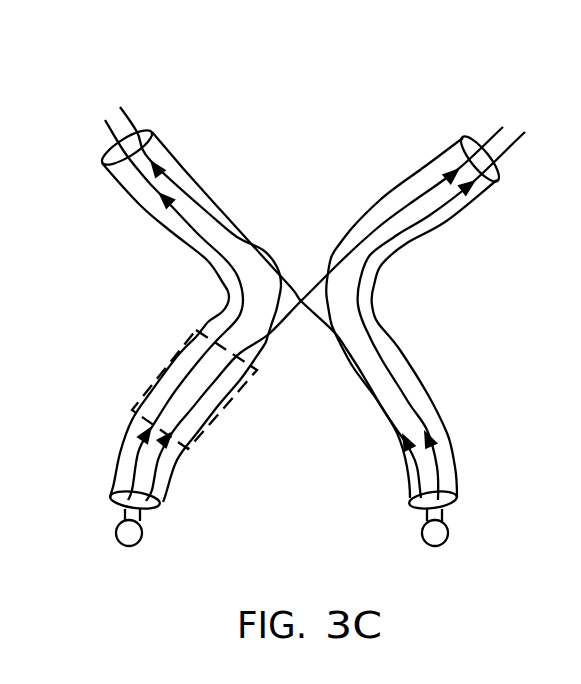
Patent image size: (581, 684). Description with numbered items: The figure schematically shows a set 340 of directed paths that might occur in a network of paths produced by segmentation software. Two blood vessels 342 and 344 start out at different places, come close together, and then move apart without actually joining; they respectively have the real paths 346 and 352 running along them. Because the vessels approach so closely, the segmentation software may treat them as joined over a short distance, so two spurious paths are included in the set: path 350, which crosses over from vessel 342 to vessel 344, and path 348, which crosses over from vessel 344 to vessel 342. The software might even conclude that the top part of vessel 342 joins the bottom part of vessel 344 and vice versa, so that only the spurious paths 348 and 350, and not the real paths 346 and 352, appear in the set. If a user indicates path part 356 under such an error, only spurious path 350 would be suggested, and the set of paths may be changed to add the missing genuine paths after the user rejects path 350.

The set of directed paths 340 is at (386, 92).
The blood vessel 342 is at (186, 351).
The blood vessel 344 is at (400, 350).
The path 346 is at (140, 188).
The spurious path 348 is at (187, 190).
The spurious path 350 is at (417, 195).
The path 352 is at (437, 205).
The path part 356 is at (225, 420).